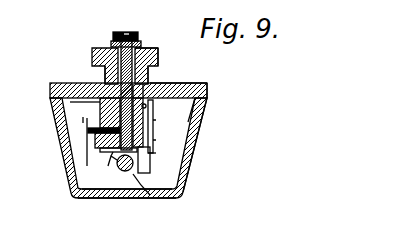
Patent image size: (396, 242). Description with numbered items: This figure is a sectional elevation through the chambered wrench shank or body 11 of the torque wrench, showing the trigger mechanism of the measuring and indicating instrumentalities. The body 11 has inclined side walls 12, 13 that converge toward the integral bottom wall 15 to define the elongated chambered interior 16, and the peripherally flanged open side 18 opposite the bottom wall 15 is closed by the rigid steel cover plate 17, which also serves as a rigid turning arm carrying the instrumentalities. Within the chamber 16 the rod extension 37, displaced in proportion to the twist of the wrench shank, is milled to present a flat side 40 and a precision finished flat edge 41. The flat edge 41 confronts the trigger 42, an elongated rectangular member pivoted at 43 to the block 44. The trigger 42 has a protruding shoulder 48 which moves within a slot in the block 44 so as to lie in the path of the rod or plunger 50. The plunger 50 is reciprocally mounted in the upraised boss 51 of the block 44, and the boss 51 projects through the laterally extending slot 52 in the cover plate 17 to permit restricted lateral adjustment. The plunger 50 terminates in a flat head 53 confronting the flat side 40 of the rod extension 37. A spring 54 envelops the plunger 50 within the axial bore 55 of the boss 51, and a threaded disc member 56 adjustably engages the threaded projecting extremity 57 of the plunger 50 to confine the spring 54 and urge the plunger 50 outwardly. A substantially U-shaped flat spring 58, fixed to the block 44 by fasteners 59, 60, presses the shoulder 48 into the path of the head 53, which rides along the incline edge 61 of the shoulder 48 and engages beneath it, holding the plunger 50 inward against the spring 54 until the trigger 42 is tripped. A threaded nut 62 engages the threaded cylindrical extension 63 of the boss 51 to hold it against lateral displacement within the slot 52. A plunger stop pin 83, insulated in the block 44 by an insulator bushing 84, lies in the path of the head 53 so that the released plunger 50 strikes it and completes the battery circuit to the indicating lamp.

The chambered wrench shank or body 11 is at (188, 190).
The inclined side wall 12 is at (67, 176).
The inclined side wall 13 is at (191, 160).
The bottom wall 15 is at (128, 195).
The chambered interior 16 is at (110, 178).
The cover plate 17 is at (204, 92).
The peripherally flanged open side 18 is at (50, 98).
The rod extension 37 is at (132, 173).
The flat side 40 is at (110, 162).
The flat edge 41 is at (150, 195).
The trigger 42 is at (150, 165).
The pivot 43 is at (154, 111).
The block 44 is at (98, 115).
The protruding shoulder 48 is at (102, 144).
The rod or plunger 50 is at (106, 81).
The upraised boss 51 is at (143, 90).
The laterally extending slot 52 is at (145, 83).
The flat head 53 is at (100, 150).
The spring 54 is at (116, 46).
The axial bore 55 is at (93, 54).
The threaded disc member 56 is at (113, 32).
The threaded projecting extremity 57 is at (134, 34).
The flat spring 58 is at (154, 151).
The fastener 59 is at (212, 71).
The fastener 60 is at (205, 83).
The incline edge 61 is at (104, 146).
The threaded nut 62 is at (158, 57).
The threaded cylindrical extension 63 is at (156, 48).
The plunger stop pin 83 is at (98, 143).
The insulator bushing 84 is at (78, 147).